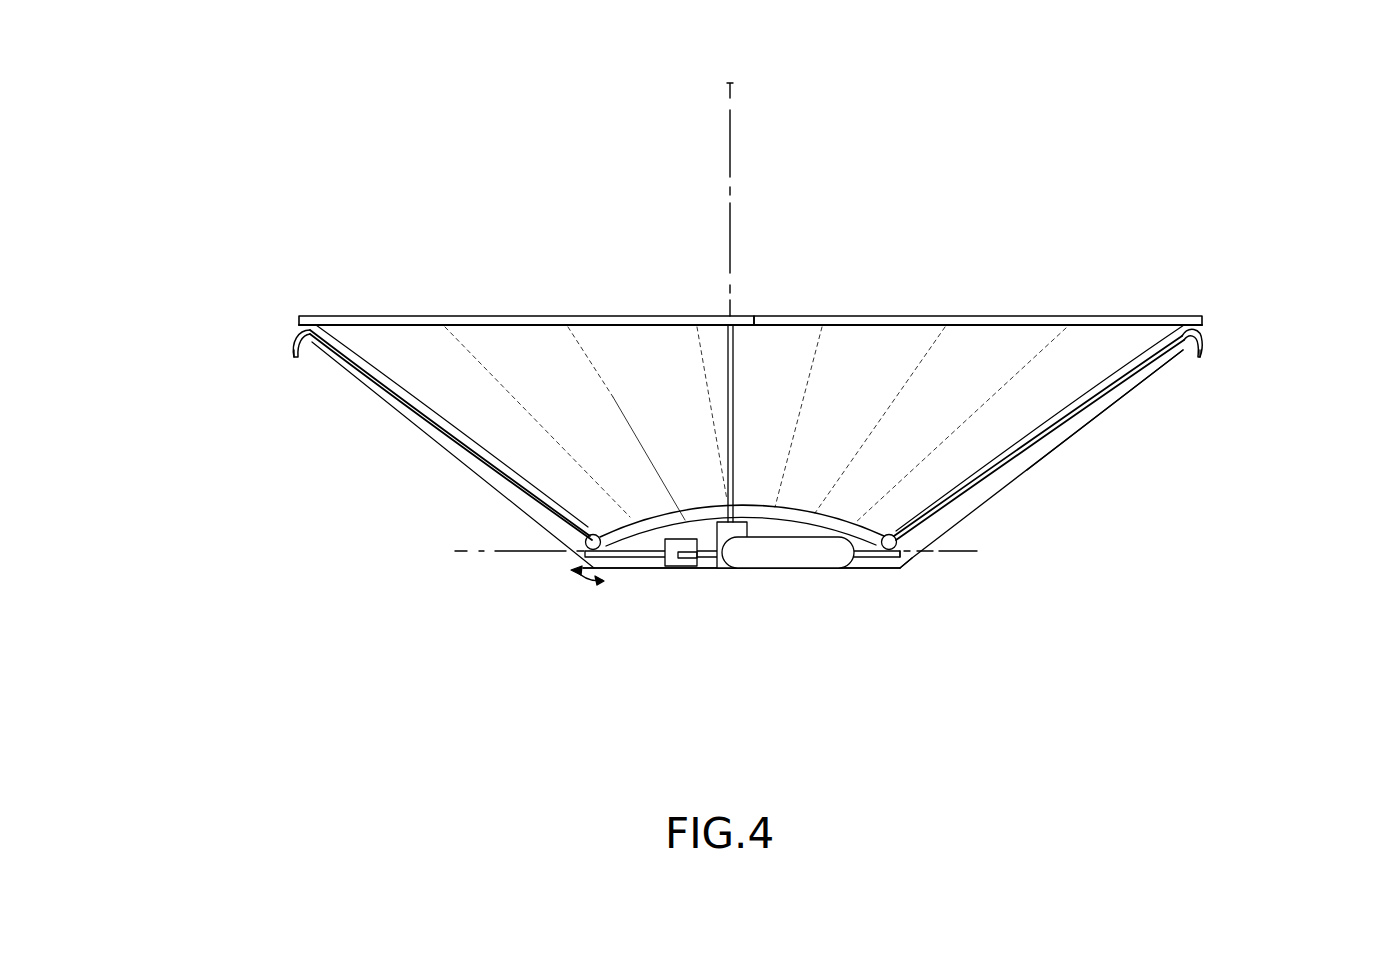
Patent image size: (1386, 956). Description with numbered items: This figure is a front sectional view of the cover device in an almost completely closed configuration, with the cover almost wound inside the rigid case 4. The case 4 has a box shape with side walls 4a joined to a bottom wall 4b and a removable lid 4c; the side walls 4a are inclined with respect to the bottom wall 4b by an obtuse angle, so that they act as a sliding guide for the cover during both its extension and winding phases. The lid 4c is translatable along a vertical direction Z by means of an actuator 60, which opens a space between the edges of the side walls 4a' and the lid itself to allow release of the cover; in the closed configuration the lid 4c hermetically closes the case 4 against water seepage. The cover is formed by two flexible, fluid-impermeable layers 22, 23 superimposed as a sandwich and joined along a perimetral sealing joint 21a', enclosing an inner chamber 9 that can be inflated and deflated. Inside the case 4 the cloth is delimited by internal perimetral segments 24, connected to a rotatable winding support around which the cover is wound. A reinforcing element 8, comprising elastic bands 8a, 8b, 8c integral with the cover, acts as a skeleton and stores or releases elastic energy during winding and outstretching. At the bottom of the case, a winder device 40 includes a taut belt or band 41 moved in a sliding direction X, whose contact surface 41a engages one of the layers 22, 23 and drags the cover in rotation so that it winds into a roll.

The layer 23 is at (297, 338).
The layer 22 is at (307, 352).
The perimetral sealing joint 21a' is at (772, 412).
The reinforcing element 8 is at (513, 485).
The elastic band 8a is at (486, 368).
The elastic band 8b is at (613, 397).
The elastic band 8c is at (705, 367).
The actuator 60 is at (743, 522).
The removable lid 4c is at (1021, 316).
The edges of the side walls 4a' is at (1207, 395).
The inner chamber 9 is at (1037, 435).
The side walls 4a is at (1102, 478).
The rigid case 4 is at (979, 507).
The contact surface 41a is at (892, 542).
The taut belt or taut band 41 is at (865, 560).
The bottom wall 4b is at (808, 569).
The winder device 40 is at (695, 563).
The internal perimetral segments 24 is at (653, 533).
The sliding direction X is at (483, 553).
The vertical direction Z is at (733, 84).